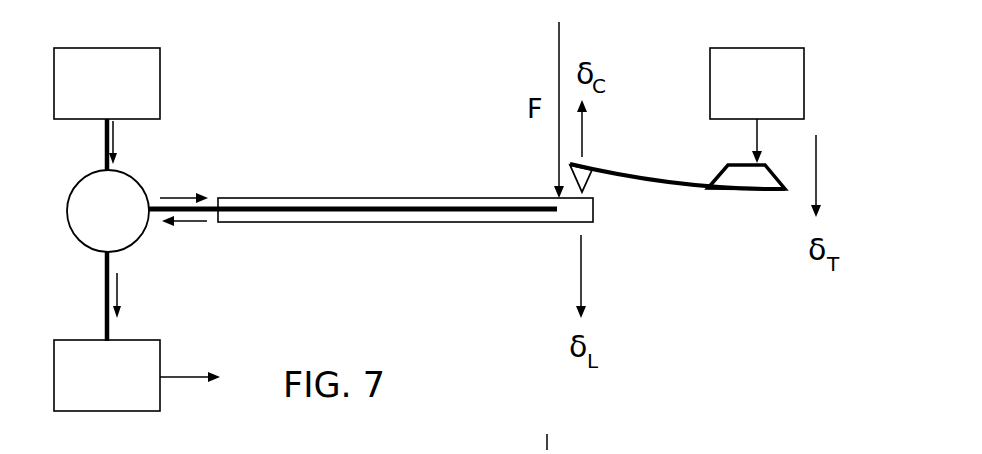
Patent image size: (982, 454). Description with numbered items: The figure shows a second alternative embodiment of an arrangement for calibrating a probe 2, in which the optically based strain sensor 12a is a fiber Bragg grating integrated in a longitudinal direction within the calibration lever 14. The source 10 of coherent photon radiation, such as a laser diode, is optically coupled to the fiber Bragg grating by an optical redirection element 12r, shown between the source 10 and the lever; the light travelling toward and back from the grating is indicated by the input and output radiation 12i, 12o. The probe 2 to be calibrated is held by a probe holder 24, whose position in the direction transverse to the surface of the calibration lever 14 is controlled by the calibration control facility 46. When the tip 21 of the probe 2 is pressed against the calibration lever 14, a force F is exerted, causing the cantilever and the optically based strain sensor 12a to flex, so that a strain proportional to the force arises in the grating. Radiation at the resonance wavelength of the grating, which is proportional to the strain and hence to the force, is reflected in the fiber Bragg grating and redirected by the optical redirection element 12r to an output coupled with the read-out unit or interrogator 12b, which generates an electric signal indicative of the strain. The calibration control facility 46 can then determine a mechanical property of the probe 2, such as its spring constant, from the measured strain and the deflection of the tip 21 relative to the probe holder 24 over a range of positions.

The source of coherent photon radiation 10 is at (107, 83).
The optical redirection element 12r is at (122, 230).
The read-out unit (interrogator) 12b is at (137, 375).
The input optical signal 12i is at (217, 208).
The output optical signal 12o is at (247, 177).
The optically based strain sensor 12a is at (336, 211).
The calibration lever 14 is at (455, 200).
The probe 2 is at (749, 247).
The tip 21 is at (585, 190).
The probe holder 24 is at (747, 177).
The calibration control facility 46 is at (757, 105).